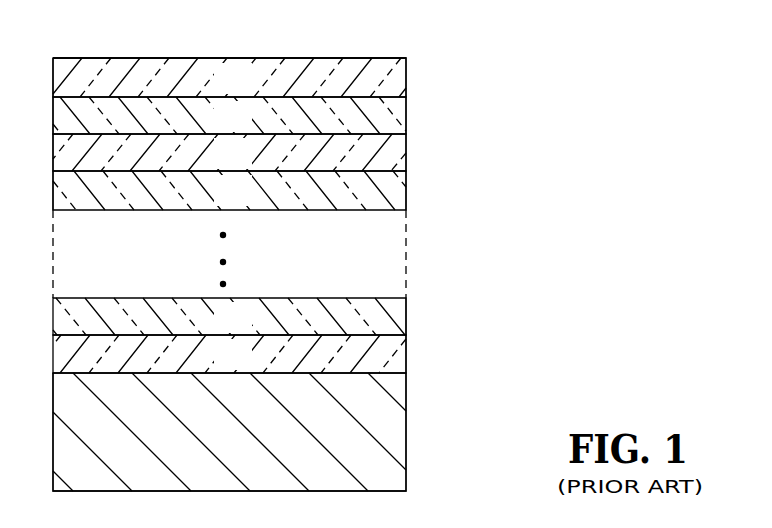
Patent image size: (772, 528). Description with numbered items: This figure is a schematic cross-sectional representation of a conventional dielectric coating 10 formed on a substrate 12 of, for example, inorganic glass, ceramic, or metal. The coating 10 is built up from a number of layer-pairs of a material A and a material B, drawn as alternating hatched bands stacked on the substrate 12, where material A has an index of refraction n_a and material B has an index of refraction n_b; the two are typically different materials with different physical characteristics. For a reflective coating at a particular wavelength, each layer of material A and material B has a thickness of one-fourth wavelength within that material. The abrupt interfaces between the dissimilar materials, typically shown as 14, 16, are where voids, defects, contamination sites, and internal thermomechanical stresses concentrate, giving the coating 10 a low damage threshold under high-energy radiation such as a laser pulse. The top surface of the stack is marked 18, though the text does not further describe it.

The conventional dielectric coating 10 is at (339, 45).
The substrate 12 is at (379, 470).
The abrupt interface 14 is at (407, 73).
The abrupt interface 16 is at (407, 121).
The top surface 18 is at (211, 58).
The material A is at (407, 92).
The material B is at (407, 136).